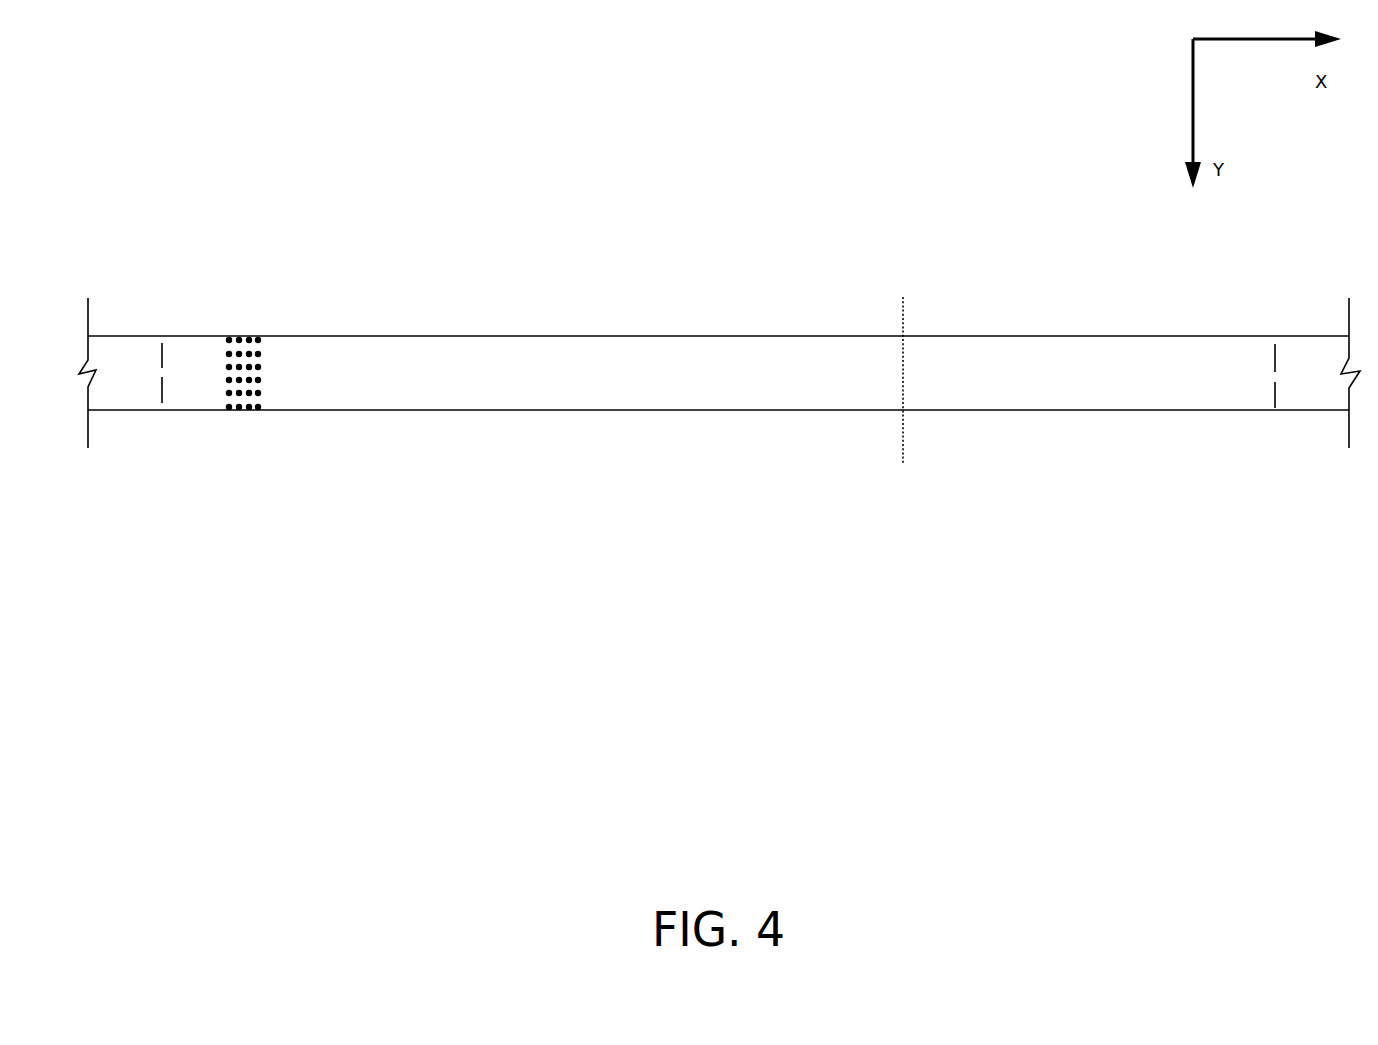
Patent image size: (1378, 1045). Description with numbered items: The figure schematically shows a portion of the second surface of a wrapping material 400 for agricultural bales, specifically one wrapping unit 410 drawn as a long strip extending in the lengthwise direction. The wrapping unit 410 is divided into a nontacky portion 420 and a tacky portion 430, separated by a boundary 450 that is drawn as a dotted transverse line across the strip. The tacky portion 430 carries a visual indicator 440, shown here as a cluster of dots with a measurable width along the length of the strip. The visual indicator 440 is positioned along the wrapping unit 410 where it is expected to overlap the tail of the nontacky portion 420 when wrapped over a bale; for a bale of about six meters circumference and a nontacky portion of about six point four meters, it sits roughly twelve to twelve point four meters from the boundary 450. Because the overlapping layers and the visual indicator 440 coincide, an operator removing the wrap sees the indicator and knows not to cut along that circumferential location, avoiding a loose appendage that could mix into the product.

The wrapping material 400 is at (699, 770).
The wrapping unit 410 is at (699, 302).
The nontacky portion 420 is at (1017, 382).
The tacky portion 430 is at (625, 373).
The visual indicator 440 is at (250, 327).
The boundary 450 is at (895, 298).